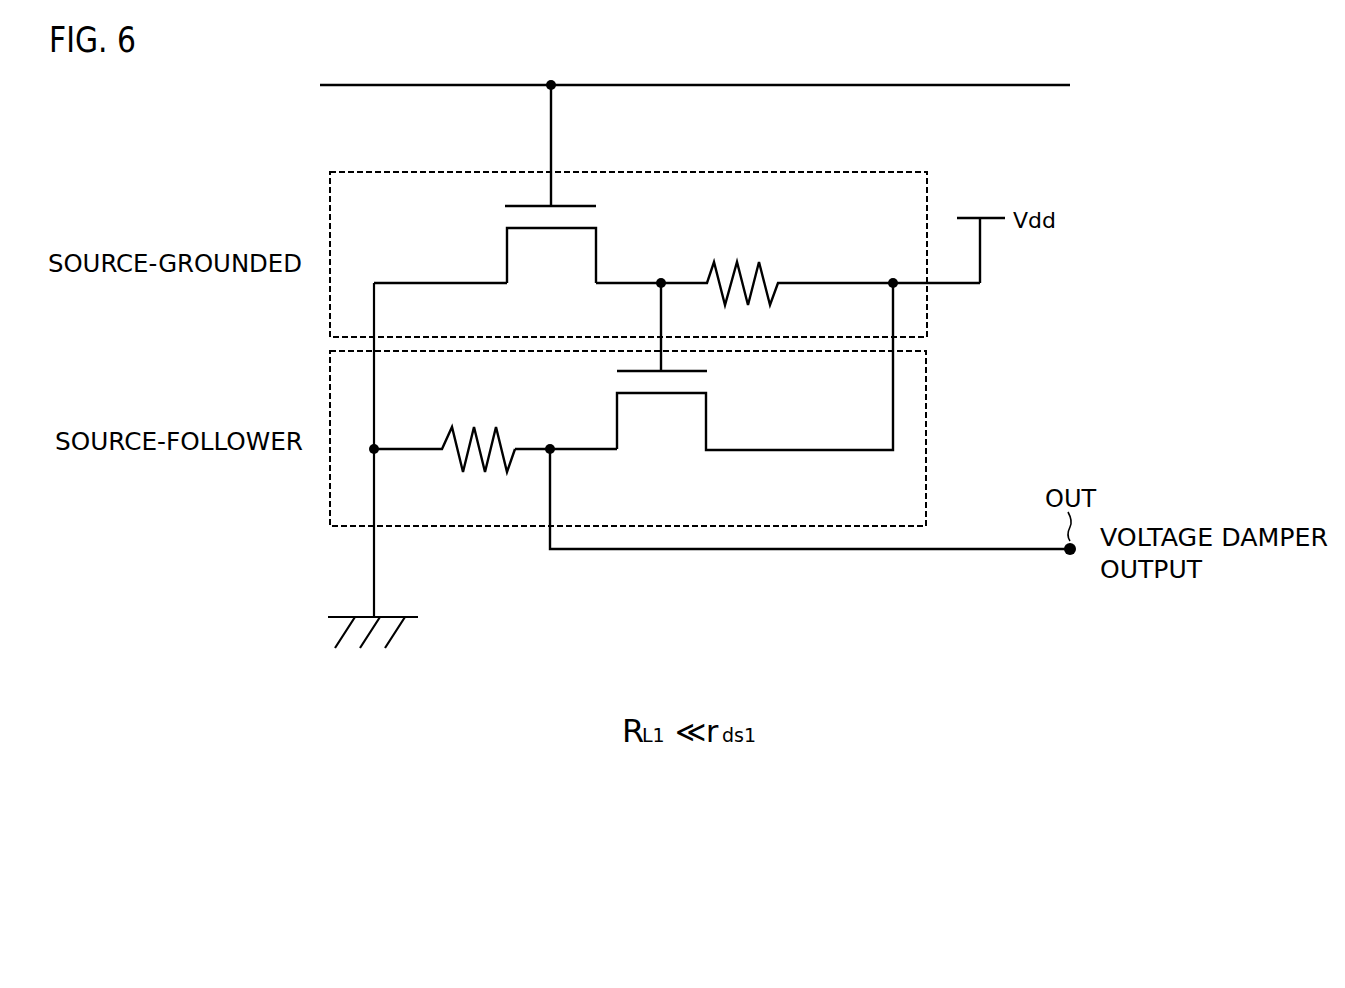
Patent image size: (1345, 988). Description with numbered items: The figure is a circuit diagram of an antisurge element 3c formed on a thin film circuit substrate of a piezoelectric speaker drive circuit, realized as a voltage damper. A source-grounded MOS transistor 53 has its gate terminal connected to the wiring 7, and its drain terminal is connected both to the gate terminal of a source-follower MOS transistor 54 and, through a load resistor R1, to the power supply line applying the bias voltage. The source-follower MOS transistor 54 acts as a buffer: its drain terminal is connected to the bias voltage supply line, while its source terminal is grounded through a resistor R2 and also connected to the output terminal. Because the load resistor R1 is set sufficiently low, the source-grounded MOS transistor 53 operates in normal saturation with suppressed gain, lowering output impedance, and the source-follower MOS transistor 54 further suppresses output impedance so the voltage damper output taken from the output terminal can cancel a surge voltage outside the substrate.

The wiring 7 is at (767, 91).
The antisurge element 3c is at (247, 540).
The source-grounded MOS transistor 53 is at (507, 249).
The source-follower MOS transistor 54 is at (707, 418).
The load resistor R1 is at (818, 270).
The resistor R2 is at (462, 466).